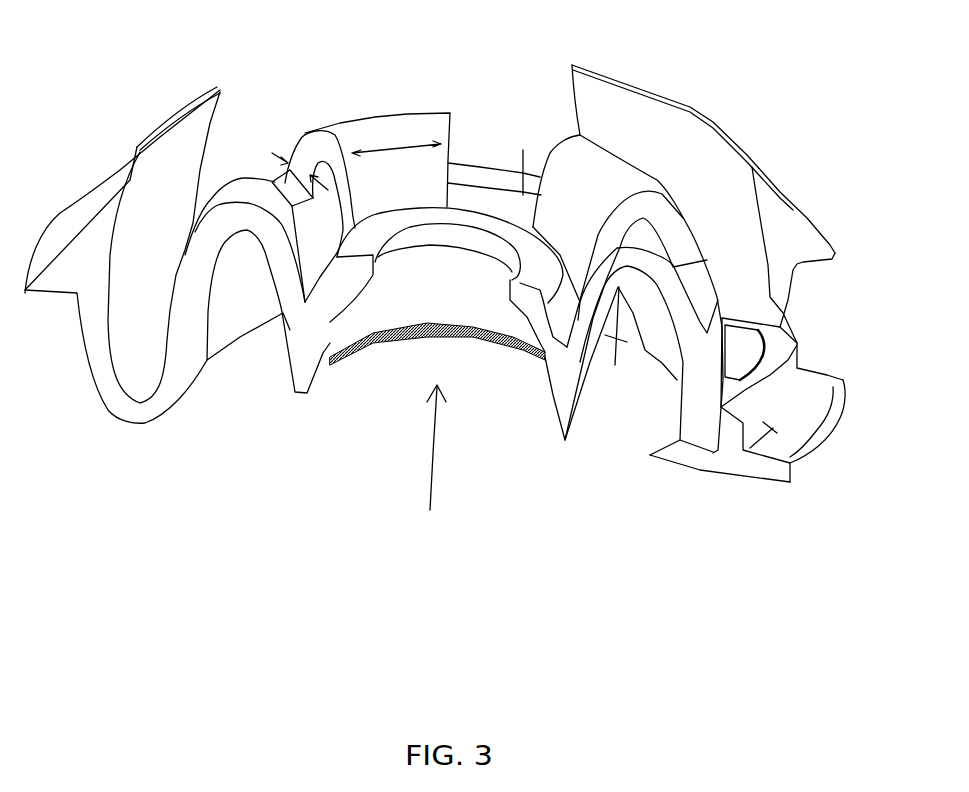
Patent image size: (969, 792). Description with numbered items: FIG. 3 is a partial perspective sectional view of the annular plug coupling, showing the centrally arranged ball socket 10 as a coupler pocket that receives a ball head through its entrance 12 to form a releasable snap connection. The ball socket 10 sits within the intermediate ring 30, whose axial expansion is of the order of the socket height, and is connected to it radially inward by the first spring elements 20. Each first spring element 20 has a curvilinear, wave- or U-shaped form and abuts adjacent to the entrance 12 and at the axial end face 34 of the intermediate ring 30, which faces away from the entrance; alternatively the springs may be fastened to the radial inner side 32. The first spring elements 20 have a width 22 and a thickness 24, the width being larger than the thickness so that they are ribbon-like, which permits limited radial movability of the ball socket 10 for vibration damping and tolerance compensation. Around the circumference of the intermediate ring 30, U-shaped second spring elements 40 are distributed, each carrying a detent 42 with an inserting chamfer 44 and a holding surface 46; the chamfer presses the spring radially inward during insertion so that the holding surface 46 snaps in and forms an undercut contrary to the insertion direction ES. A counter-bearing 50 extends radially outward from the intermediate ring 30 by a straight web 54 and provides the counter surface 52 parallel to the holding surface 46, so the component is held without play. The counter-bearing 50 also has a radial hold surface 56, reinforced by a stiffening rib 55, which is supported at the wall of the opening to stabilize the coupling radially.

The ball socket 10 is at (471, 290).
The entrance 12 is at (377, 375).
The first spring elements 20 is at (597, 362).
The width 22 is at (392, 150).
The thickness 24 is at (300, 143).
The intermediate ring 30 is at (655, 407).
The radial inner side 32 is at (477, 200).
The axial end face 34 is at (498, 196).
The second spring elements 40 is at (107, 400).
The detent 42 is at (83, 202).
The inserting chamfer 44 is at (812, 205).
The holding surface 46 is at (820, 263).
The counter-bearing 50 is at (827, 440).
The counter surface 52 is at (810, 402).
The web 54 is at (687, 457).
The stiffening rib 55 is at (746, 310).
The radial hold surface 56 is at (767, 420).
The insertion direction ES is at (433, 467).